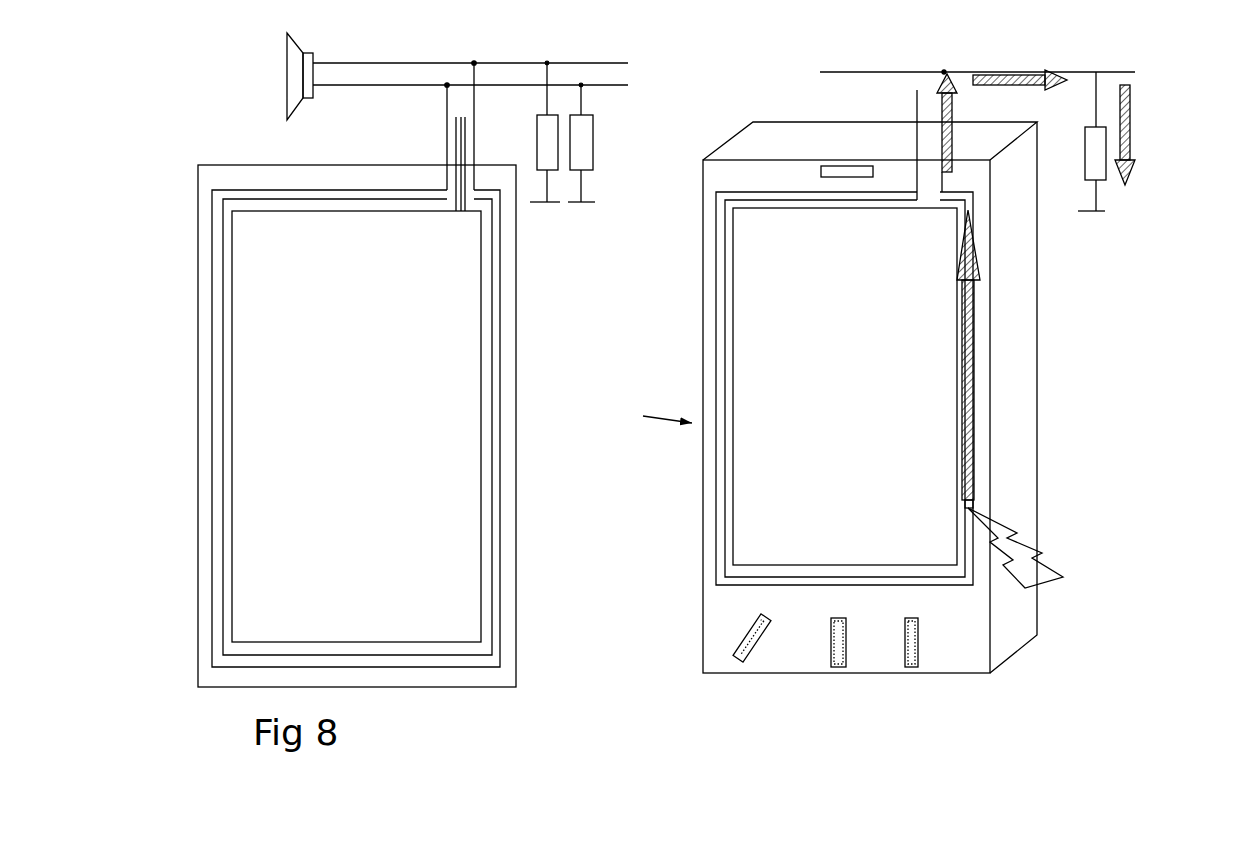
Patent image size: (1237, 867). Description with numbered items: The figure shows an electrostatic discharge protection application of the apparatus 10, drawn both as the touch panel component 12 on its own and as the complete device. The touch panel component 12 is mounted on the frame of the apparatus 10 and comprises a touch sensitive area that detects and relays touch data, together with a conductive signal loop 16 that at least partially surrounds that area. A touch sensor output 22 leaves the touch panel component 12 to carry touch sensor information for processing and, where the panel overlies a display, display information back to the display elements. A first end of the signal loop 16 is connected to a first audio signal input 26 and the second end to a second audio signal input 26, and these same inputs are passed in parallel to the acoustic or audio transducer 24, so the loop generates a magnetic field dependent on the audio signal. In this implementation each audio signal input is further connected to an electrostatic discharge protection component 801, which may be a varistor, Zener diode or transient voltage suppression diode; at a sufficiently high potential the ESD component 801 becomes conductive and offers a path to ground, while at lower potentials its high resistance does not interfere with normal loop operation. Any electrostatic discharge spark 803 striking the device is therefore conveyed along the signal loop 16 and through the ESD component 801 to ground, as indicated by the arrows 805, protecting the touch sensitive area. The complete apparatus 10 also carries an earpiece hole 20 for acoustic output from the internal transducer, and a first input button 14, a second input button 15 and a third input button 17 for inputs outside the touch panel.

The apparatus 10 is at (1002, 660).
The touch panel component 12 is at (702, 597).
The input button 1 14 is at (755, 660).
The input button 2 15 is at (840, 667).
The signal loop 16 is at (503, 423).
The input button 3 17 is at (912, 667).
The earpiece hole 20 is at (848, 164).
The touch sensor output 22 is at (452, 125).
The audio transducer 24 is at (284, 72).
The audio signal inputs 26 is at (648, 84).
The electrostatic discharge protection component 801 is at (601, 151).
The electrostatic discharge spark 803 is at (1053, 565).
The arrows 805 is at (1137, 162).